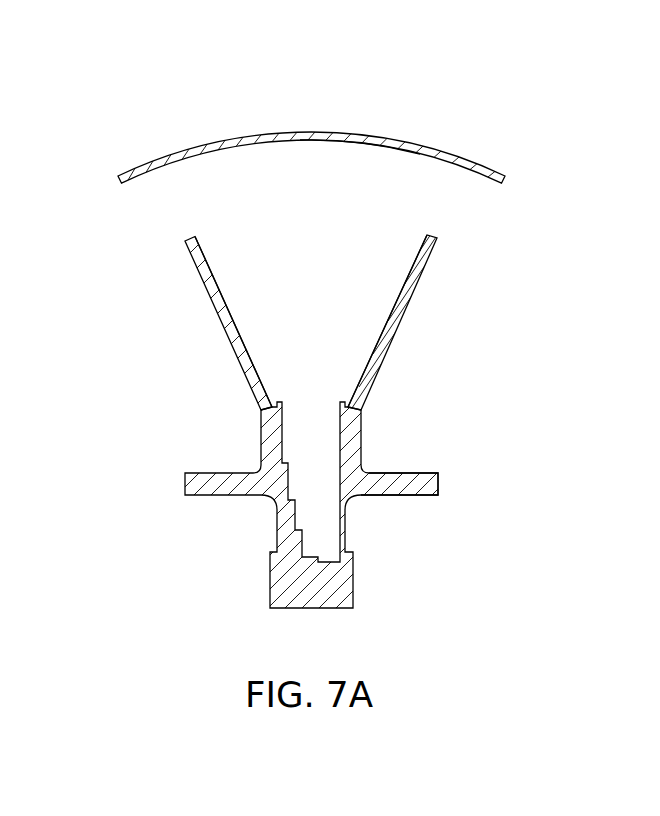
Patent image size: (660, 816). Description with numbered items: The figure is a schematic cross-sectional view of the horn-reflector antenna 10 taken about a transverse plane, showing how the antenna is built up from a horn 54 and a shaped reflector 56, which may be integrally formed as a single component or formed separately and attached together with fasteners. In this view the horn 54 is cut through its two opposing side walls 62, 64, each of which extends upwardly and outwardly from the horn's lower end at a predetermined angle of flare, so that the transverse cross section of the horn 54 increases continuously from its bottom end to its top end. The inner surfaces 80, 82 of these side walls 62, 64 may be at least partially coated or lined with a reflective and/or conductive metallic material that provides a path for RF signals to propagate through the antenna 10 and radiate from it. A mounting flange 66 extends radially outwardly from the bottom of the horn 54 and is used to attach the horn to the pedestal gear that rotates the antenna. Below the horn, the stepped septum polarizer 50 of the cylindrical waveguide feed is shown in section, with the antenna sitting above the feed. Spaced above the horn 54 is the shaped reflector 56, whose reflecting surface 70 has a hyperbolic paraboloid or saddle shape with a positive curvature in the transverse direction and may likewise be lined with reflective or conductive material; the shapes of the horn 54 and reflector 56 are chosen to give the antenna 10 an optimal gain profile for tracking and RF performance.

The horn-reflector antenna 10 is at (564, 123).
The septum polarizer 50 is at (297, 513).
The horn 54 is at (447, 261).
The shaped reflector 56 is at (356, 125).
The side wall 62 is at (229, 338).
The side wall 64 is at (393, 338).
The mounting flange 66 is at (438, 480).
The reflecting surface 70 is at (388, 149).
The inner surface 80 is at (228, 304).
The inner surface 82 is at (394, 305).